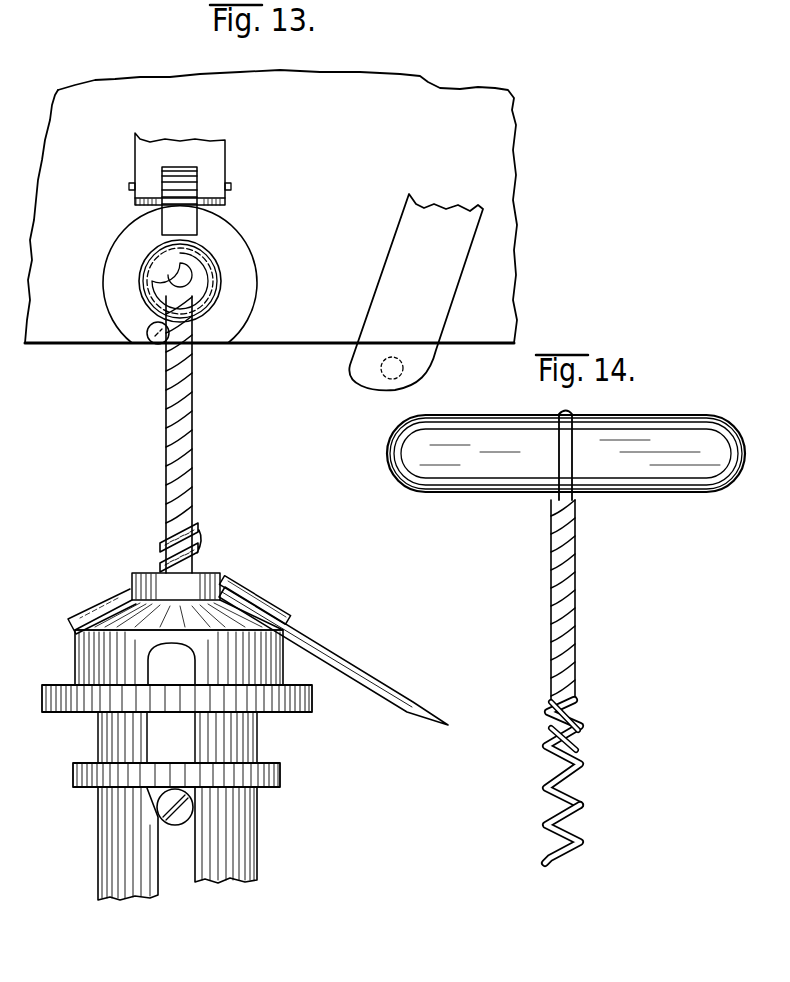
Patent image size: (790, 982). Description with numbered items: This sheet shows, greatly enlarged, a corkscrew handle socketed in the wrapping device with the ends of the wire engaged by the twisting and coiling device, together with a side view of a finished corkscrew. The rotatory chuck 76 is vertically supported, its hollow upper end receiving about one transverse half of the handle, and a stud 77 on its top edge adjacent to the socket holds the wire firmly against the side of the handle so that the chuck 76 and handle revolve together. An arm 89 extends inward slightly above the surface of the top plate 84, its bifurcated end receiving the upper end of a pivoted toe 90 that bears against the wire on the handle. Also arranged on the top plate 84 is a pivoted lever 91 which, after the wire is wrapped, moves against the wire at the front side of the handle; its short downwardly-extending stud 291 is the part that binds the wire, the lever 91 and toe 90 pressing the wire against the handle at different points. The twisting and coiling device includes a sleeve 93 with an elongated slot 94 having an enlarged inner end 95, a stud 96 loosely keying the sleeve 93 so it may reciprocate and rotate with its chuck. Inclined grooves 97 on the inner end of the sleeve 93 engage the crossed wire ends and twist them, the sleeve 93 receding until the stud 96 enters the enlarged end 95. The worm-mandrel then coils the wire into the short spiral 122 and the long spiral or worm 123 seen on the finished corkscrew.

In FIG. 13, the rotatory chuck 76 is at (180, 274).
In FIG. 13, the stud 77 is at (151, 344).
In FIG. 13, the top plate 84 is at (271, 206).
In FIG. 13, the arm 89 is at (172, 140).
In FIG. 13, the pivoted toe 90 is at (179, 201).
In FIG. 13, the pivoted lever 91 is at (416, 292).
In FIG. 13, the downwardly-extending stud 291 is at (389, 380).
In FIG. 13, the sleeve 93 is at (100, 826).
In FIG. 13, the elongated slot 94 is at (180, 875).
In FIG. 13, the enlarged inner end 95 is at (177, 680).
In FIG. 13, the stud 96 is at (177, 824).
In FIG. 13, the inclined grooves 97 is at (118, 598).
In FIG. 14, the short spiral 122 is at (582, 745).
In FIG. 14, the long spiral or worm 123 is at (582, 840).